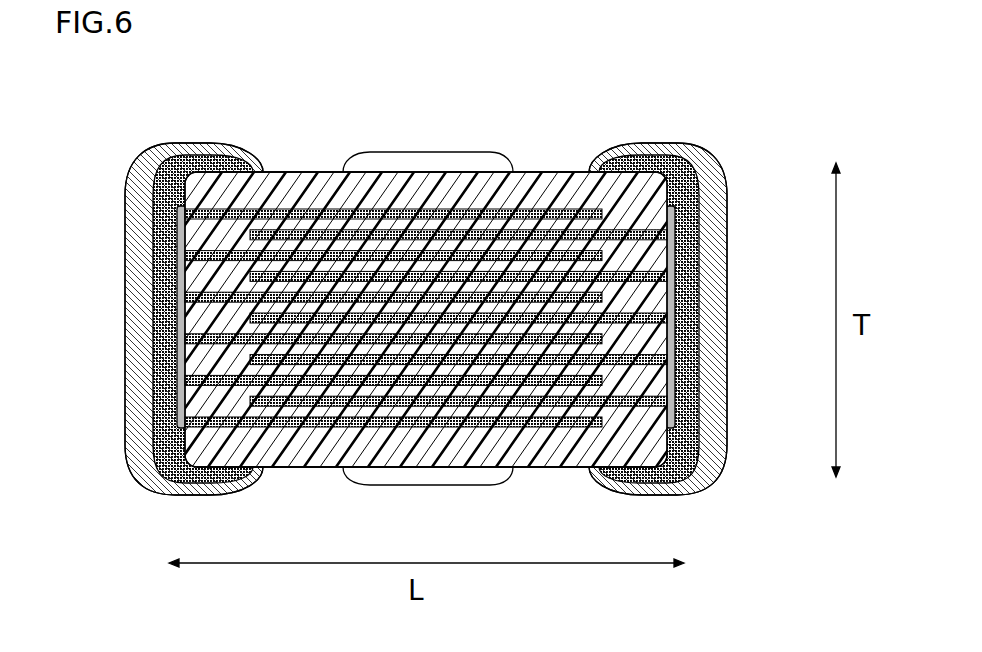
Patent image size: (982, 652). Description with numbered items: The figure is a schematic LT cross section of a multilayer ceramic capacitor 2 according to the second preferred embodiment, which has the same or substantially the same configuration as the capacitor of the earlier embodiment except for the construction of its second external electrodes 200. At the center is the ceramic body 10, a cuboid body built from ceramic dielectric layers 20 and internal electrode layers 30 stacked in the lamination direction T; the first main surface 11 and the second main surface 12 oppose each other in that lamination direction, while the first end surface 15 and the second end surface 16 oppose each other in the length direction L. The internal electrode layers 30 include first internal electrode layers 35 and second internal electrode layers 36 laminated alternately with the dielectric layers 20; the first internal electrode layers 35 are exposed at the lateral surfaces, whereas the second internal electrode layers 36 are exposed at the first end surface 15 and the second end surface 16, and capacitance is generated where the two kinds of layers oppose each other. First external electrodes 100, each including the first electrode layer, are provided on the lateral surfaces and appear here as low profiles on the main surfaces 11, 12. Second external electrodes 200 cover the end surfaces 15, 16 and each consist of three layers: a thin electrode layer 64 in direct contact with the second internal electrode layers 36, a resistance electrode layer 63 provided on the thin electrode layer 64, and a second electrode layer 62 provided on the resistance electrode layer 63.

The multilayer ceramic capacitor 2 is at (776, 102).
The ceramic body 10 is at (439, 310).
The first main surface 11 is at (288, 172).
The second main surface 12 is at (315, 468).
The first end surface 15 is at (186, 393).
The second end surface 16 is at (693, 319).
The ceramic dielectric layer 20 is at (514, 247).
The internal electrode layer 30 is at (419, 374).
The first internal electrode layer 35 is at (515, 363).
The second internal electrode layer 36 is at (248, 428).
The second electrode layer 62 is at (178, 111).
The resistance electrode layer 63 is at (160, 266).
The thin electrode layer 64 is at (180, 320).
The first external electrode 100 is at (501, 111).
The second external electrode 200 is at (427, 288).